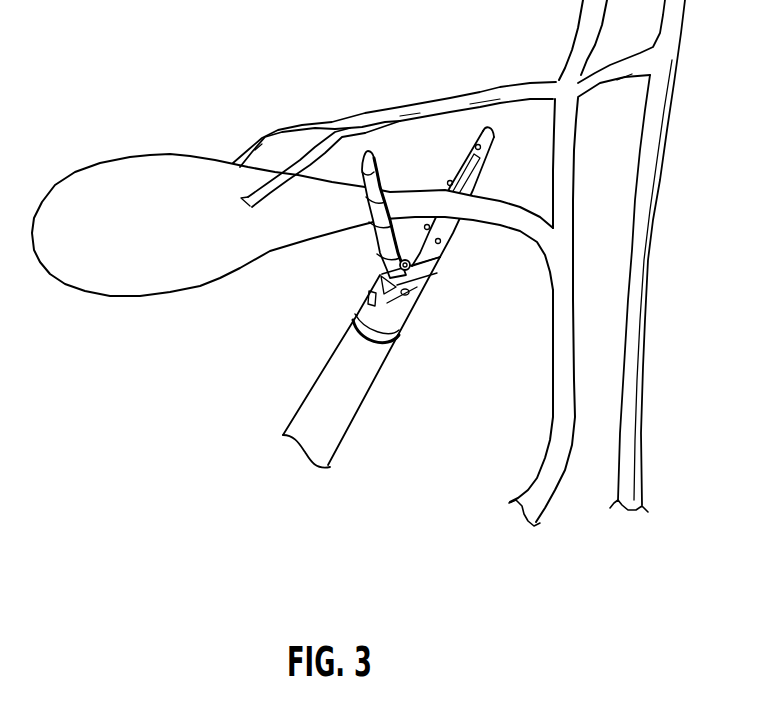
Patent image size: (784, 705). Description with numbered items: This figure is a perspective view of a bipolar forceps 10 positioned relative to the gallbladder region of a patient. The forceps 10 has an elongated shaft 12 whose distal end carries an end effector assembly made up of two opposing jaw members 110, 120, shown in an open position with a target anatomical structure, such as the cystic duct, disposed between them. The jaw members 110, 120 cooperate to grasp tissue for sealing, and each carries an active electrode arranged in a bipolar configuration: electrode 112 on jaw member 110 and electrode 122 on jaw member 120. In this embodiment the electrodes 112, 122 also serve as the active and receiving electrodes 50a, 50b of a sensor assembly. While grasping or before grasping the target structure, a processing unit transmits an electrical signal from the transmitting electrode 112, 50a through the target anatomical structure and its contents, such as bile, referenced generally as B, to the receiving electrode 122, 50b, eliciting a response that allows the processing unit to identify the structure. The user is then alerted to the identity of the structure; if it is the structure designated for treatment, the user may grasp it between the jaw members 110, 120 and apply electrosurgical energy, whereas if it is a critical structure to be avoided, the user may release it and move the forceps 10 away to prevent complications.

The bipolar forceps 10 is at (379, 404).
The shaft 12 is at (320, 397).
The jaw member 110 is at (367, 236).
The jaw member 120 is at (459, 236).
The active electrode 112 is at (376, 158).
The active electrode 122 is at (481, 131).
The active electrode 50a is at (384, 214).
The receiving electrode 50b is at (453, 196).
The contents of the target anatomical structure B is at (120, 165).